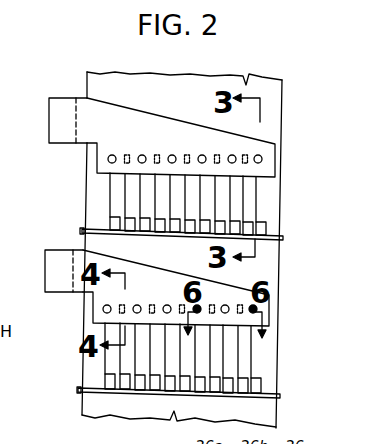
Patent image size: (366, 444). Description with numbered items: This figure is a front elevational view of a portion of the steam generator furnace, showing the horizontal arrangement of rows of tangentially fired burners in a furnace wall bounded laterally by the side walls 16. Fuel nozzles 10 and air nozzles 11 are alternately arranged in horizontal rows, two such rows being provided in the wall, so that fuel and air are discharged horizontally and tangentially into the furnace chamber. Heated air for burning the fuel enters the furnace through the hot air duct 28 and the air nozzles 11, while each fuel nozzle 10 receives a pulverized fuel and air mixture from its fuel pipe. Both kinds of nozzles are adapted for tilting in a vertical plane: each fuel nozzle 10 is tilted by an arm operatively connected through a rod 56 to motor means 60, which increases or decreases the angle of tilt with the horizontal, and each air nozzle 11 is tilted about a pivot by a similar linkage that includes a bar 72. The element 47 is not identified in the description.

The fuel nozzle 10 is at (171, 155).
The air nozzle 11 is at (244, 154).
The side wall 16 is at (282, 183).
The hot air duct 28 is at (152, 114).
The bracket 47 is at (49, 123).
The rod 56 is at (257, 196).
The motor means 60 is at (148, 217).
The bar 72 is at (135, 205).